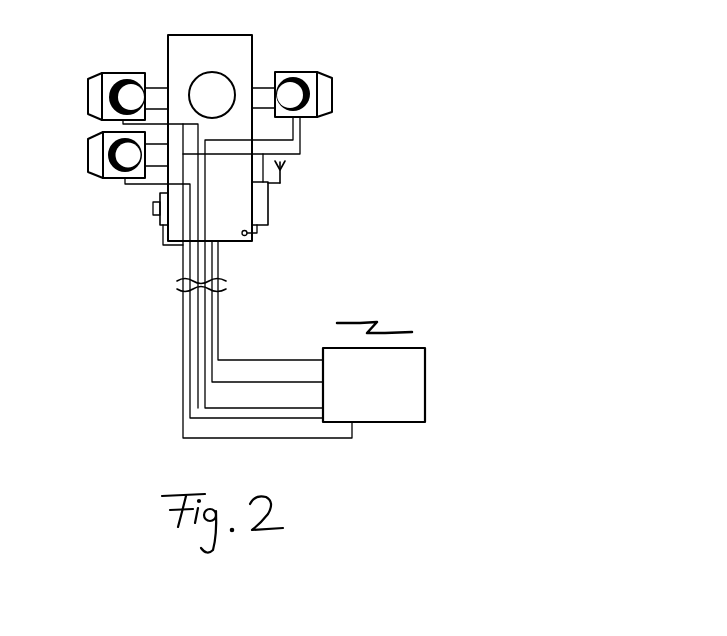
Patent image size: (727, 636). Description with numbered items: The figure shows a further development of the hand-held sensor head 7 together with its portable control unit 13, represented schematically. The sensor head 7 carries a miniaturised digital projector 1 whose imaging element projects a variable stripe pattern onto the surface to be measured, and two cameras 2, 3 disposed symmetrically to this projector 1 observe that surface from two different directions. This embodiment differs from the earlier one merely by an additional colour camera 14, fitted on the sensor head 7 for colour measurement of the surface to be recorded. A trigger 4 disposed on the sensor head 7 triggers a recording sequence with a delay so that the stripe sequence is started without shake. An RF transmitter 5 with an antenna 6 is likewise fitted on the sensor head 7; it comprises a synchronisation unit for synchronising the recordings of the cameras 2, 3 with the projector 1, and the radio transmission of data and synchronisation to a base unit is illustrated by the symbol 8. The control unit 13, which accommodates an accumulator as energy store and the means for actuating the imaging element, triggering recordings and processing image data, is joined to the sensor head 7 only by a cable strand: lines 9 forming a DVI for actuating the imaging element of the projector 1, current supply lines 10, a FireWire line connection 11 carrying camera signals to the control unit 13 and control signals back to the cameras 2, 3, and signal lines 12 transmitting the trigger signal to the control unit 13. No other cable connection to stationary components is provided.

The projector 1 is at (238, 65).
The camera 2 is at (140, 72).
The camera 3 is at (284, 72).
The trigger 4 is at (154, 219).
The RF transmitter 5 is at (255, 195).
The antenna 6 is at (282, 172).
The sensor head 7 is at (350, 160).
The radio transmission symbol 8 is at (374, 316).
The lines for actuating the imaging element 9 is at (293, 360).
The current supply lines 10 is at (292, 382).
The line connection 11 is at (248, 408).
The signal lines 12 is at (246, 438).
The control unit 13 is at (383, 397).
The colour camera 14 is at (84, 166).